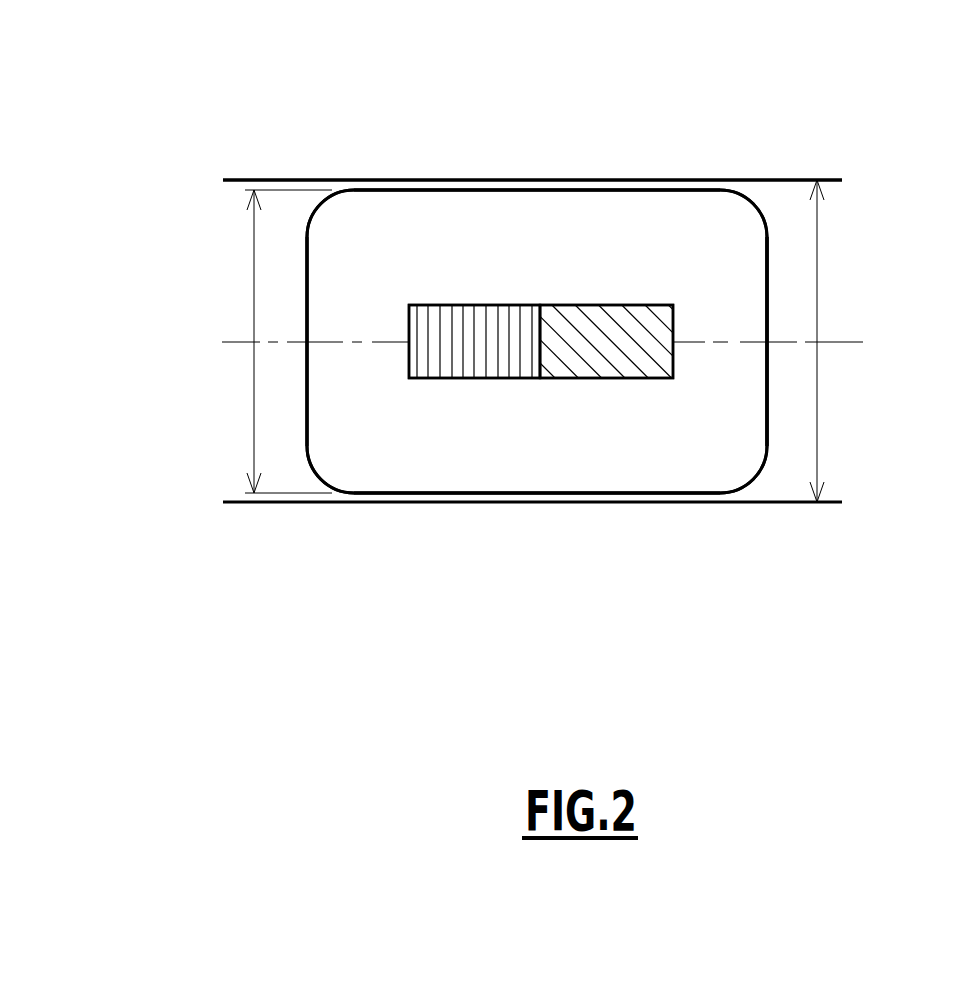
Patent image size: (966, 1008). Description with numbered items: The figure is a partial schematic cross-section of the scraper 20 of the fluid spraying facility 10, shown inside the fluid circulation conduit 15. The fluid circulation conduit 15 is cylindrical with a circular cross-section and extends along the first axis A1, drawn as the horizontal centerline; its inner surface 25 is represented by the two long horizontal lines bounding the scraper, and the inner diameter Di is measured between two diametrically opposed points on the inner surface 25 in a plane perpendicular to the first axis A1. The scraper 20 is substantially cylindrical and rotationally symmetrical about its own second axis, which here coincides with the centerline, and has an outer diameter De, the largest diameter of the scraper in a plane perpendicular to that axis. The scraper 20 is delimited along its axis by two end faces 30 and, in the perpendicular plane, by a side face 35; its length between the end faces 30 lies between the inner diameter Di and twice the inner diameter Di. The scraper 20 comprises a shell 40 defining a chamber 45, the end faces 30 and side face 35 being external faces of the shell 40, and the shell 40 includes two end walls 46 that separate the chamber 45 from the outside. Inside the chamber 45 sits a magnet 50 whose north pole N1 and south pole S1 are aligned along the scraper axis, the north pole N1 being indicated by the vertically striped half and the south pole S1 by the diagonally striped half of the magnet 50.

The fluid spraying facility 10 is at (352, 131).
The fluid circulation conduit 15 is at (787, 180).
The scraper 20 is at (472, 513).
The inner surface 25 is at (228, 199).
The end faces 30 is at (281, 423).
The side face 35 is at (461, 173).
The shell 40 is at (376, 495).
The chamber 45 is at (605, 468).
The end walls 46 is at (767, 413).
The magnet 50 is at (532, 249).
The north pole N1 is at (430, 325).
The south pole S1 is at (628, 325).
The outer diameter De is at (253, 371).
The inner diameter Di is at (817, 258).
The first axis A1 is at (584, 360).